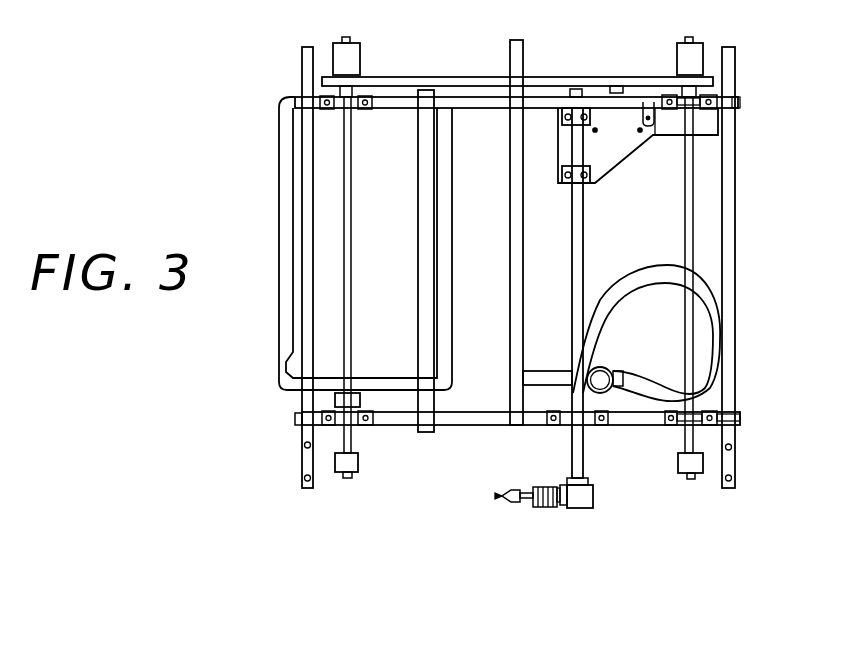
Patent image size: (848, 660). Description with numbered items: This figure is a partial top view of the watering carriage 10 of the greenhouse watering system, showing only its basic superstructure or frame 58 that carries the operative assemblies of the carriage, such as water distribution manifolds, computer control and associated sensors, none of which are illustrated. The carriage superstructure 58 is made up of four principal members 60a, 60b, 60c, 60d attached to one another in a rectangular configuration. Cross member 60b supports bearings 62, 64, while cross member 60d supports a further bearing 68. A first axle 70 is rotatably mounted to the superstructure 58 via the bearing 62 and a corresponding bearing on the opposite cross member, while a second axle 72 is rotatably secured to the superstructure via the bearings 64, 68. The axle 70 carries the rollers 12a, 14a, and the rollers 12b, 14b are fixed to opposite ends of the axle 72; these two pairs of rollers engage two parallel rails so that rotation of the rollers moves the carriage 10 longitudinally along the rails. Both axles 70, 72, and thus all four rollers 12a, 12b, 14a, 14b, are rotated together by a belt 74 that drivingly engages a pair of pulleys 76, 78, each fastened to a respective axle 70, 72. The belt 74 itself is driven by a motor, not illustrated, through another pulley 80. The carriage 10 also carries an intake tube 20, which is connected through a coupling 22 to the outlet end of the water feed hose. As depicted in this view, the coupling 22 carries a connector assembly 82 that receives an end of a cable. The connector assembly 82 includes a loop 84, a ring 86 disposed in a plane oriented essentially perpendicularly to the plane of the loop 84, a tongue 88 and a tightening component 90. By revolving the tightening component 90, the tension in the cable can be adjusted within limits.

The watering carriage 10 is at (238, 364).
The roller 12a is at (342, 63).
The roller 12b is at (700, 50).
The roller 14a is at (357, 468).
The roller 14b is at (697, 465).
The intake tube 20 is at (650, 278).
The coupling 22 is at (583, 498).
The carriage superstructure 58 is at (298, 405).
The principal member 60a is at (302, 125).
The cross member 60b is at (483, 108).
The principal member 60c is at (735, 213).
The cross member 60d is at (467, 412).
The bearing 62 is at (366, 110).
The bearing 64 is at (672, 110).
The bearing 68 is at (667, 426).
The first axle 70 is at (348, 253).
The second axle 72 is at (686, 194).
The belt 74 is at (469, 77).
The pulley 76 is at (363, 77).
The pulley 78 is at (675, 77).
The pulley 80 is at (615, 86).
The connector assembly 82 is at (500, 512).
The loop 84 is at (514, 492).
The ring 86 is at (518, 492).
The tongue 88 is at (527, 503).
The tightening component 90 is at (548, 508).